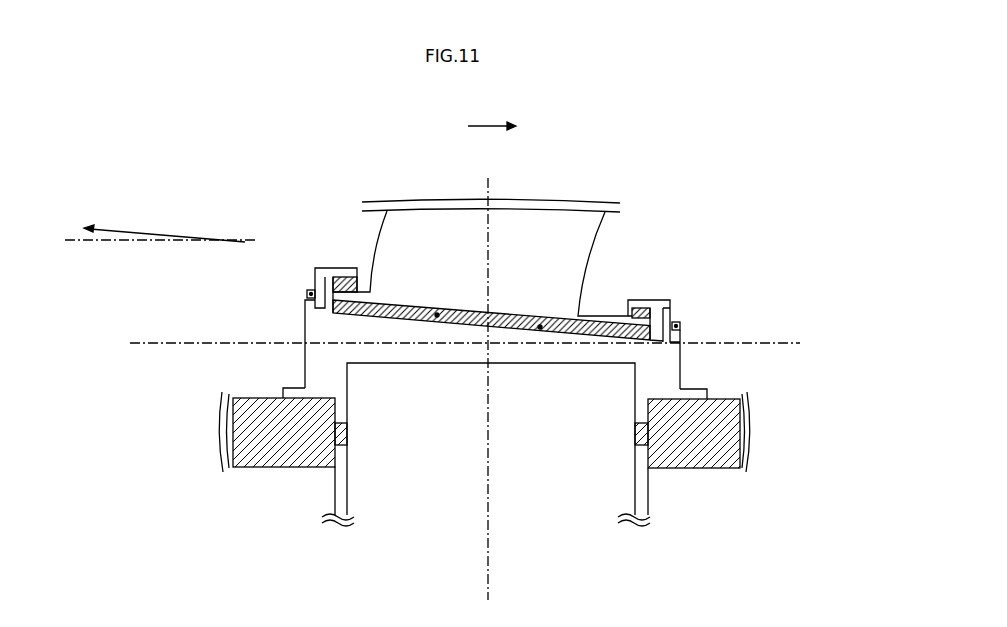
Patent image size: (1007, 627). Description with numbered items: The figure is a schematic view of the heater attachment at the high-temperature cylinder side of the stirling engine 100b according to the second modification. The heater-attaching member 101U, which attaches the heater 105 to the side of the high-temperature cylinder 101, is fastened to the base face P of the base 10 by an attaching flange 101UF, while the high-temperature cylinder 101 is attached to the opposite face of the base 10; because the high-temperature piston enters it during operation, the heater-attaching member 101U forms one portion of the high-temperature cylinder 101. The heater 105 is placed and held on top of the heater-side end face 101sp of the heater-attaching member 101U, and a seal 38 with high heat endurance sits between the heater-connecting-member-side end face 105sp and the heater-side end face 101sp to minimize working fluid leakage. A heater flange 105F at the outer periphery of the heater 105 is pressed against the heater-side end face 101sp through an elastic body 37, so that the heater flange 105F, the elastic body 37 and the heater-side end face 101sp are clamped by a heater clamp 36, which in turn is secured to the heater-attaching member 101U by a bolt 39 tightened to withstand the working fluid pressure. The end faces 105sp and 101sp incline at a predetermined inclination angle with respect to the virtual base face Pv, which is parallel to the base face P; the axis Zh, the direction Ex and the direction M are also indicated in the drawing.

The stirling engine 100b is at (815, 142).
The heater 105 is at (414, 240).
The heater flange 105F is at (336, 292).
The heater-connecting-member-side end face 105sp is at (540, 330).
The high-temperature cylinder 101 is at (640, 473).
The heater-attaching member 101U is at (313, 358).
The attaching flange 101UF is at (292, 393).
The heater-side end face 101sp is at (438, 312).
The base 10 is at (250, 458).
The heater clamp 36 is at (318, 284).
The elastic body 37 is at (317, 268).
The seal 38 is at (522, 318).
The bolt 39 is at (306, 293).
The base face P is at (722, 399).
The virtual base face Pv is at (236, 243).
The center axis Zh is at (486, 378).
The extension direction Ex is at (504, 127).
The tilt direction line M is at (117, 232).